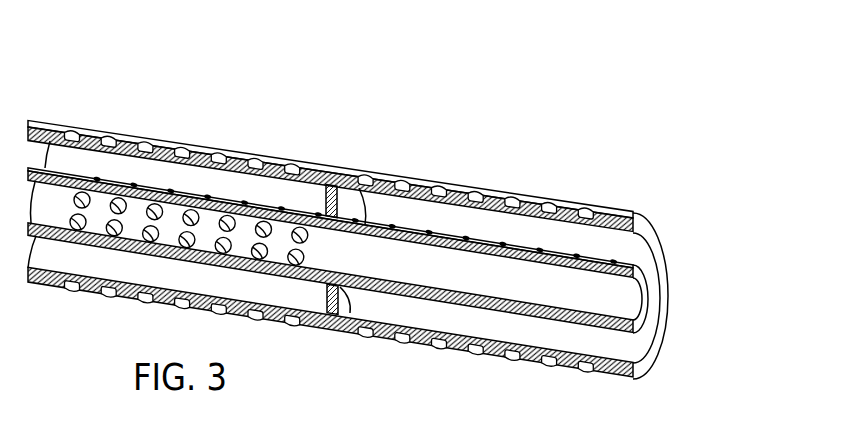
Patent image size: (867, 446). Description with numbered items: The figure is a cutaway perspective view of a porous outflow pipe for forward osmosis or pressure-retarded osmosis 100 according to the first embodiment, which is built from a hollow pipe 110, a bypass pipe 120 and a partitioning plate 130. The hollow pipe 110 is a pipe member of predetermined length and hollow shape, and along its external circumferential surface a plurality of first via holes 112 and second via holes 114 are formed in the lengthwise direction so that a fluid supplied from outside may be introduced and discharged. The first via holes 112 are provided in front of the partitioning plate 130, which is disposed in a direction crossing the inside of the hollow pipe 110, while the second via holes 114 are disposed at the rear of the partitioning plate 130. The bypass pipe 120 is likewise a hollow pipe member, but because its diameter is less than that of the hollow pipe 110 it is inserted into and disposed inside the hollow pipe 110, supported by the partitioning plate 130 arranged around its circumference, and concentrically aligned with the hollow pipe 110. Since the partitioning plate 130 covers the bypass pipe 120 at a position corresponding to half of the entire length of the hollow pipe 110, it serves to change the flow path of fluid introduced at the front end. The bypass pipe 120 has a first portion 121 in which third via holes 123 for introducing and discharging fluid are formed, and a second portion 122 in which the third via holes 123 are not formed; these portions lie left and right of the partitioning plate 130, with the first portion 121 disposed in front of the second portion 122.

The porous outflow pipe for forward osmosis or pressure-retarded osmosis 100 is at (386, 223).
The hollow pipe 110 is at (348, 230).
The first via holes 112 is at (255, 163).
The second via holes 114 is at (517, 200).
The bypass pipe 120 is at (386, 196).
The first portion 121 is at (191, 194).
The second portion 122 is at (456, 238).
The third via holes 123 is at (120, 187).
The partitioning plate 130 is at (343, 199).